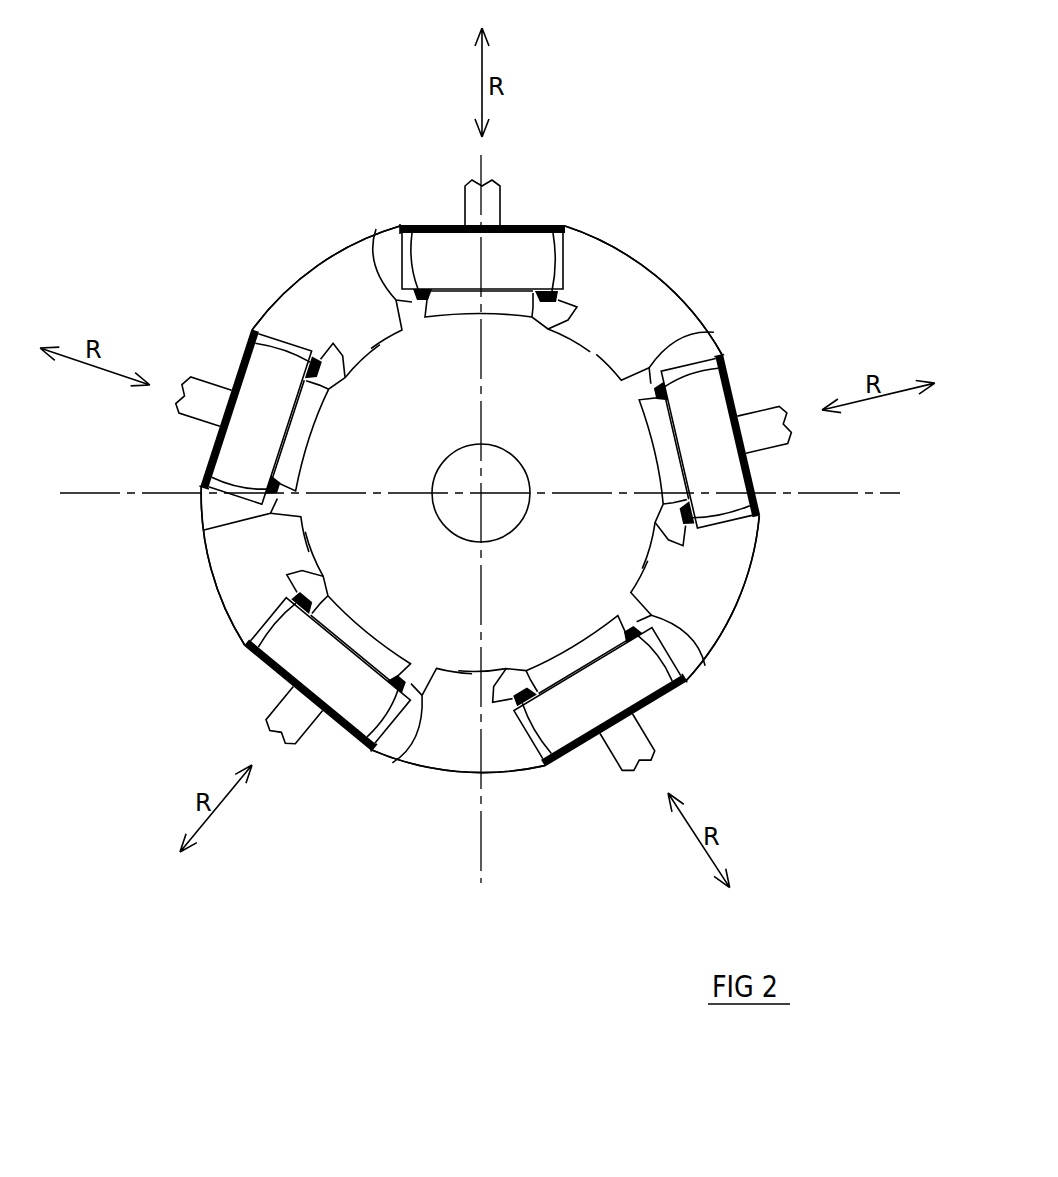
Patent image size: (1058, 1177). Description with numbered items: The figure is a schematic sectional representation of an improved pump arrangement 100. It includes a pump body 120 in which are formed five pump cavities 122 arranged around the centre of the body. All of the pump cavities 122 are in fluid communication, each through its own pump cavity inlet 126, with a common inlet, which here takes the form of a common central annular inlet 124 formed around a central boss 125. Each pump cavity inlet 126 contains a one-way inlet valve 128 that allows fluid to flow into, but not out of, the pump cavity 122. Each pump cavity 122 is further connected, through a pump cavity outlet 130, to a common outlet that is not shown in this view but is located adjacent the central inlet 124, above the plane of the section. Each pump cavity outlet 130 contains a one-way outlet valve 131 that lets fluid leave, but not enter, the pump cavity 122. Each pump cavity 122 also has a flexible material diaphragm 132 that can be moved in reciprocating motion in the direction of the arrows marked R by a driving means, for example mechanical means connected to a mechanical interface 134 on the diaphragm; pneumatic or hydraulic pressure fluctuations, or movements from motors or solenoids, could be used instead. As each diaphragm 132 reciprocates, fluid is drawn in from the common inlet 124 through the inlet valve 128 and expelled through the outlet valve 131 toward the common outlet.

The pump arrangement 100 is at (234, 110).
The pump body 120 is at (644, 327).
The pump cavity 122 is at (279, 413).
The common central annular inlet 124 is at (568, 575).
The boss 125 is at (476, 491).
The pump cavity inlet 126 is at (471, 512).
The one-way inlet valve 128 is at (471, 500).
The pump cavity outlet 130 is at (502, 508).
The one-way outlet valve 131 is at (518, 483).
The flexible material diaphragm 132 is at (486, 474).
The mechanical interface 134 is at (523, 455).